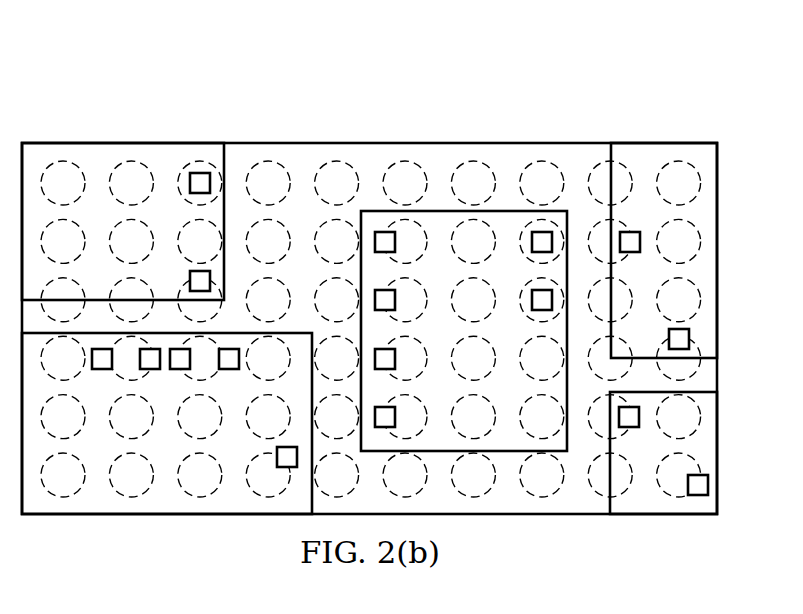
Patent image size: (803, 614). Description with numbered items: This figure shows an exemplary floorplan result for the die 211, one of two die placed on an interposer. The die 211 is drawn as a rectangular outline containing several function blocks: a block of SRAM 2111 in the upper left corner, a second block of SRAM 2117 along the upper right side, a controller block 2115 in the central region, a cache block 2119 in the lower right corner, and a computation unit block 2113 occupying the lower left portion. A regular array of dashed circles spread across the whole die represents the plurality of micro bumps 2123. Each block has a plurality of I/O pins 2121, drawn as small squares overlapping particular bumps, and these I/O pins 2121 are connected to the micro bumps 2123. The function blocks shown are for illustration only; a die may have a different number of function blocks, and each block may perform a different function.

The die 211 is at (249, 106).
The SRAM 2111 is at (123, 143).
The computation unit block 2113 is at (168, 512).
The controller block 2115 is at (513, 443).
The SRAM 2117 is at (660, 150).
The cache block 2119 is at (630, 512).
The I/O pins 2121 is at (699, 497).
The micro bumps 2123 is at (413, 150).